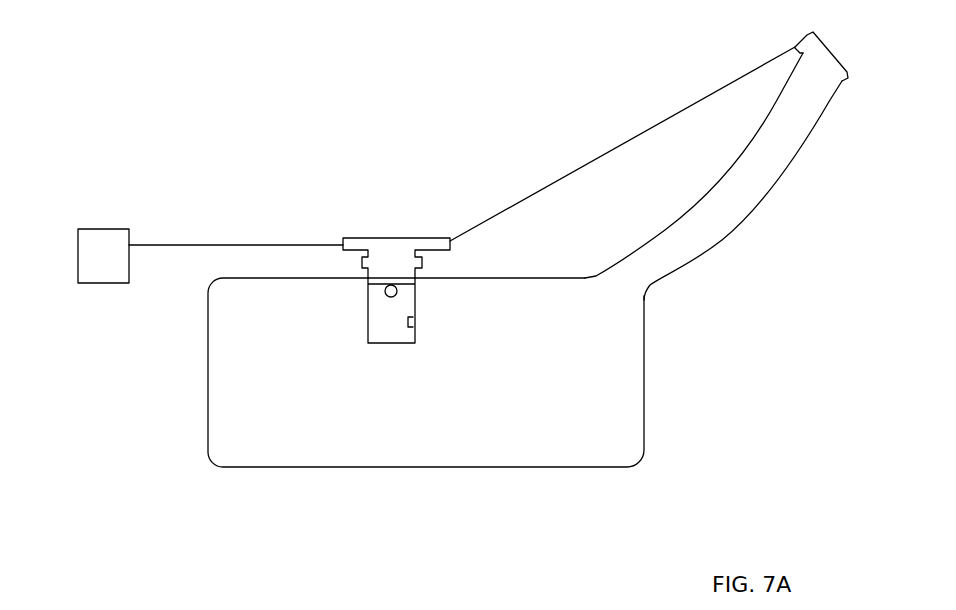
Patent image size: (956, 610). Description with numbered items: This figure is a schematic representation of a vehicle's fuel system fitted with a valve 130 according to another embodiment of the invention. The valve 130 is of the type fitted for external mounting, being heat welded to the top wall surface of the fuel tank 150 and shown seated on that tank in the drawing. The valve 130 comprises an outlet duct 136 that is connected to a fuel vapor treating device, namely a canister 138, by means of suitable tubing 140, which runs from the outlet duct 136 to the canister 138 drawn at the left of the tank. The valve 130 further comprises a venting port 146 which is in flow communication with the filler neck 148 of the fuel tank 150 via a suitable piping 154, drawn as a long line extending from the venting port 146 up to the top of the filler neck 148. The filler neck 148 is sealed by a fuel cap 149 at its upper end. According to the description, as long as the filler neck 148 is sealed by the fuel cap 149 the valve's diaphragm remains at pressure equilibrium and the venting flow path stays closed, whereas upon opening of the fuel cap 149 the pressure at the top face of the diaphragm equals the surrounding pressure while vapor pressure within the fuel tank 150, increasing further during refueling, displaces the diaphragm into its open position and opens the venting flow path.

The valve 130 is at (350, 307).
The outlet duct 136 is at (351, 242).
The canister 138 is at (103, 252).
The tubing 140 is at (232, 244).
The venting port 146 is at (432, 244).
The filler neck 148 is at (753, 173).
The fuel cap 149 is at (825, 53).
The fuel tank 150 is at (646, 357).
The piping 154 is at (631, 140).